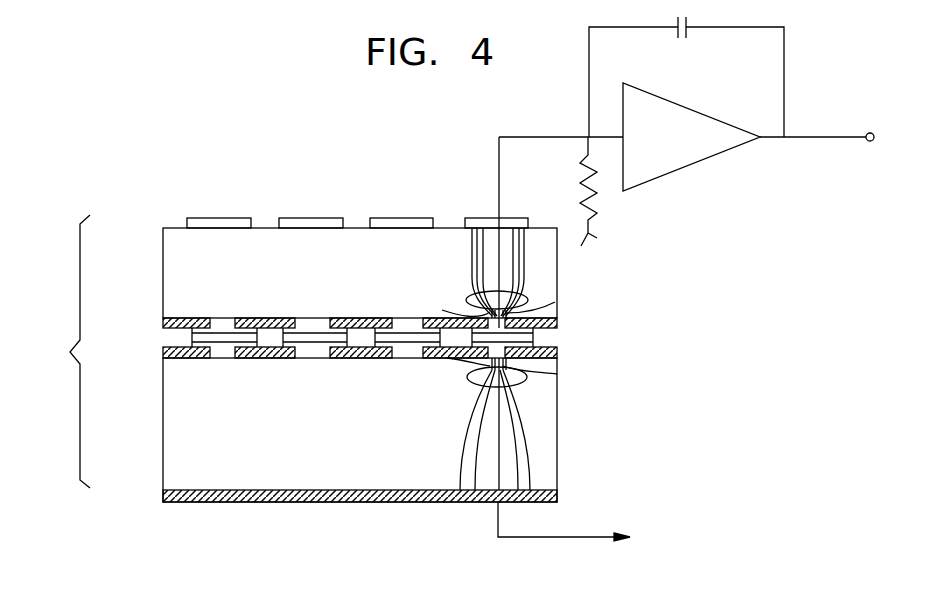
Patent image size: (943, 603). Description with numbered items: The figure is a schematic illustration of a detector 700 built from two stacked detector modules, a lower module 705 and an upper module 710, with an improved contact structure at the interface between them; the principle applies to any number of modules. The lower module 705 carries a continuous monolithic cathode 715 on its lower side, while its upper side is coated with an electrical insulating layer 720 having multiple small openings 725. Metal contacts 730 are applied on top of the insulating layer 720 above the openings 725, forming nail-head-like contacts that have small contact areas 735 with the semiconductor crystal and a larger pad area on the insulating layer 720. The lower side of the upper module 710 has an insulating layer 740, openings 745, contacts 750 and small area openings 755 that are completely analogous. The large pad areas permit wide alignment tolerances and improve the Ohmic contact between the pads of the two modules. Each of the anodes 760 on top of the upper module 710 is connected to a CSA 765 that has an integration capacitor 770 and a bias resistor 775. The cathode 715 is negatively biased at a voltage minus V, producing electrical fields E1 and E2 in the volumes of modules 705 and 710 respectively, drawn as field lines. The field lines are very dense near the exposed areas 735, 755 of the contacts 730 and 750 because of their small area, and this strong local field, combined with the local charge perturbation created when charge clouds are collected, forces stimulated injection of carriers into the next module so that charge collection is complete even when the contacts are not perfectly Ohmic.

The detector 700 is at (56, 351).
The lower module 705 is at (163, 434).
The upper module 710 is at (163, 265).
The cathode 715 is at (293, 501).
The insulating layer 720 is at (557, 352).
The openings 725 is at (313, 358).
The metal contacts 730 is at (468, 352).
The small contact areas 735 is at (557, 374).
The insulating layer 740 is at (558, 325).
The openings 745 is at (315, 322).
The contacts 750 is at (480, 320).
The small area openings 755 is at (555, 302).
The anodes 760 is at (488, 218).
The CSA 765 is at (706, 146).
The integration capacitor 770 is at (712, 27).
The bias resistor 775 is at (603, 188).
The electrical field E1 is at (478, 293).
The electrical field E2 is at (476, 378).